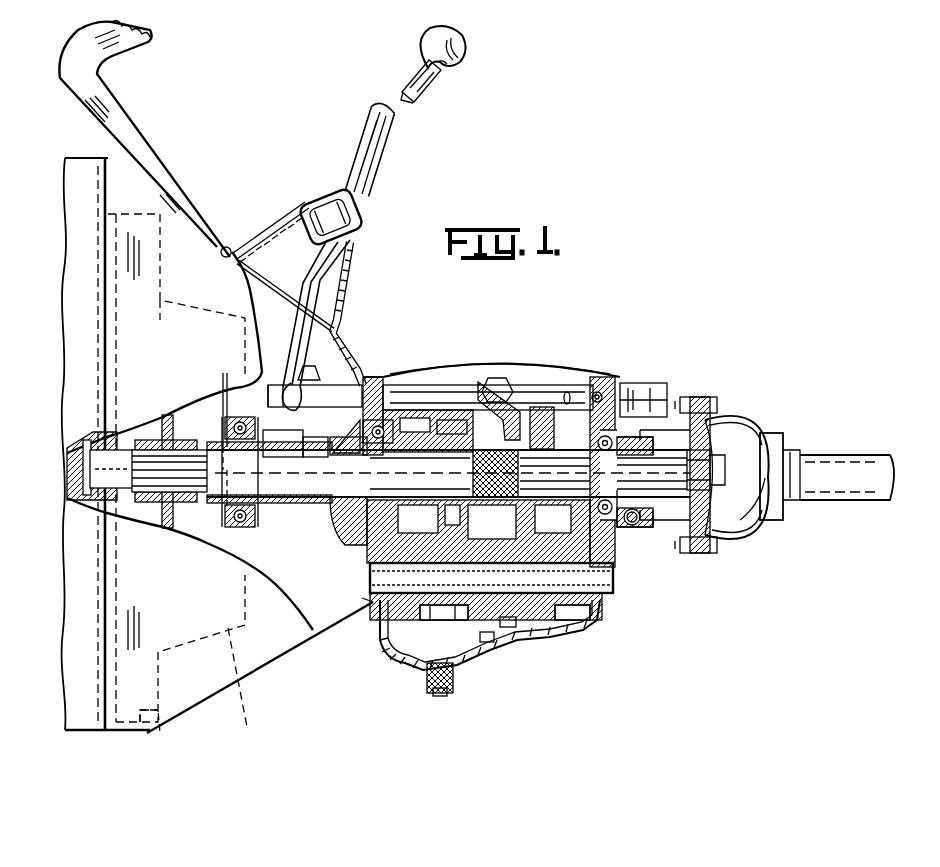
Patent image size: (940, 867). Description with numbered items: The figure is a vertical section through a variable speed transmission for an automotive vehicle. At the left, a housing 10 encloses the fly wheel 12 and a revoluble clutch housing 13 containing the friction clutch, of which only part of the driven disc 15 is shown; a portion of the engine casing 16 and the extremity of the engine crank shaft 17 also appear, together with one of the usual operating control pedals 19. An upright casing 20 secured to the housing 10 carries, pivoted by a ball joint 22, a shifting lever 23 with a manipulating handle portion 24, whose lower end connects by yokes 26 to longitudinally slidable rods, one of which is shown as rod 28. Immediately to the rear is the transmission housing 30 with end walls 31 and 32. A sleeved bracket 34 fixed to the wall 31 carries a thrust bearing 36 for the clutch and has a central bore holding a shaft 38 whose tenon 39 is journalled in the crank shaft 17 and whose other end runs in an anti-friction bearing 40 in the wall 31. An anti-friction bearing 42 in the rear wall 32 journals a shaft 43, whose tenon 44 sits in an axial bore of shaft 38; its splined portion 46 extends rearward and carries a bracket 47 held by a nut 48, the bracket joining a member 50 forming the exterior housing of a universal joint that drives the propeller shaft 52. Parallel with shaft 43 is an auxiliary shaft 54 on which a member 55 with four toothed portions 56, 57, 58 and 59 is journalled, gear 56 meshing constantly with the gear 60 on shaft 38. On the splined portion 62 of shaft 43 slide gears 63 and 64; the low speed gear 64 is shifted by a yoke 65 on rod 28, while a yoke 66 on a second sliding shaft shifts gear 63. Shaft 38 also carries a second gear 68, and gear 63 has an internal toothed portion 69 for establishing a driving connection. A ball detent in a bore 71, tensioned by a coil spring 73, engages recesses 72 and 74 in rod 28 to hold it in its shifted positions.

The housing 10 is at (267, 660).
The fly wheel 12 is at (150, 733).
The revoluble clutch housing 13 is at (249, 681).
The driven disc 15 is at (112, 420).
The engine casing 16 is at (82, 737).
The engine crank shaft 17 is at (67, 477).
The operating control pedal 19 is at (147, 162).
The upright casing 20 is at (345, 276).
The ball joint 22 is at (337, 230).
The shifting lever 23 is at (398, 136).
The manipulating handle portion 24 is at (466, 48).
The yokes 26 is at (320, 383).
The slidable rod 28 is at (430, 386).
The housing 30 is at (527, 640).
The end wall 31 is at (407, 433).
The rear wall 32 is at (652, 387).
The sleeved bracket 34 is at (350, 517).
The thrust bearing 36 is at (250, 525).
The shaft 38 is at (230, 482).
The tenon 39 is at (103, 465).
The anti-friction bearing 40 is at (362, 540).
The anti-friction bearing 42 is at (612, 545).
The shaft 43 is at (573, 493).
The tenon 44 is at (358, 443).
The splined portion 46 is at (655, 507).
The bracket 47 is at (712, 420).
The nut 48 is at (702, 480).
The member 50 is at (727, 537).
The drive or propeller shaft 52 is at (857, 467).
The auxiliary shaft 54 is at (377, 605).
The member 55 is at (440, 606).
The gear 56 is at (403, 645).
The gear 57 is at (487, 635).
The gear 58 is at (507, 620).
The gear 59 is at (570, 618).
The gear 60 is at (423, 390).
The splined portion 62 is at (547, 463).
The gear 63 is at (470, 444).
The low speed gear 64 is at (542, 407).
The yoke 65 is at (507, 383).
The yoke 66 is at (465, 398).
The gear 68 is at (427, 513).
The internal toothed portion 69 is at (440, 423).
The bore 71 is at (603, 372).
The recess 72 is at (572, 395).
The coil spring 73 is at (643, 377).
The recess 74 is at (668, 372).